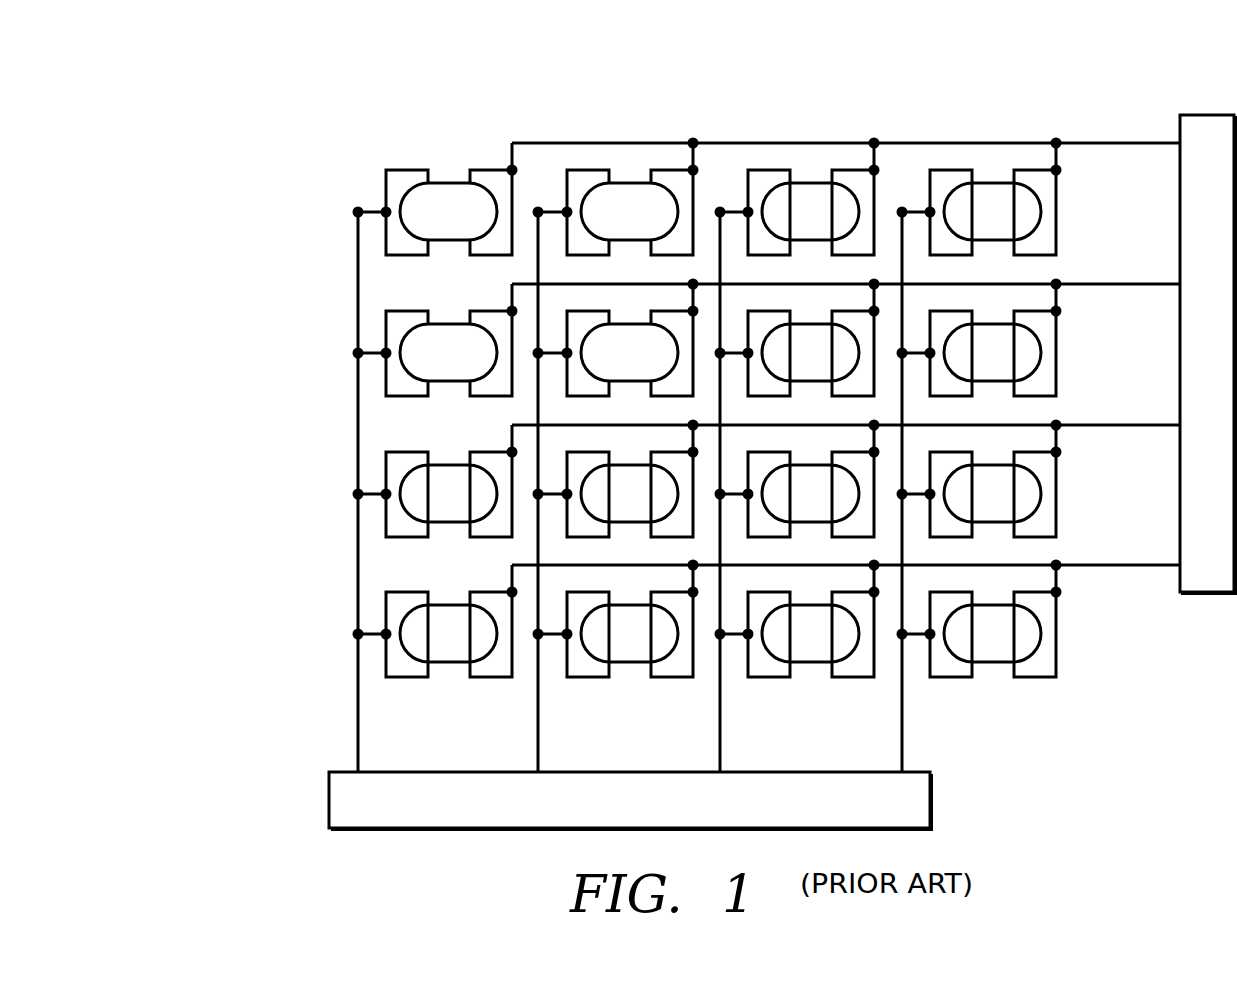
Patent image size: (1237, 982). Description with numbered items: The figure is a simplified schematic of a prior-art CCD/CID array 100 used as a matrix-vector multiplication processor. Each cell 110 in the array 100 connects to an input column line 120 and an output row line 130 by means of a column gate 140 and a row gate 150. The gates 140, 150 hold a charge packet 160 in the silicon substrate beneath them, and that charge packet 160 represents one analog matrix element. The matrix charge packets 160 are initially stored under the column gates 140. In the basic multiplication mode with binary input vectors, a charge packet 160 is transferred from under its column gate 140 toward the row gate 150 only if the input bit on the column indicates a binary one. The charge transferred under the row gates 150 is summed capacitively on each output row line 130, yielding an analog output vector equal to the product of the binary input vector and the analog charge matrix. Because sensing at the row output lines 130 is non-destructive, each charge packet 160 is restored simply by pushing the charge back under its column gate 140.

The CCD/CID array 100 is at (345, 170).
The cell 110 is at (1064, 715).
The input column line 120 is at (358, 557).
The output row line 130 is at (963, 142).
The column gate 140 is at (942, 678).
The row gate 150 is at (1035, 678).
The charge packet 160 is at (1042, 470).